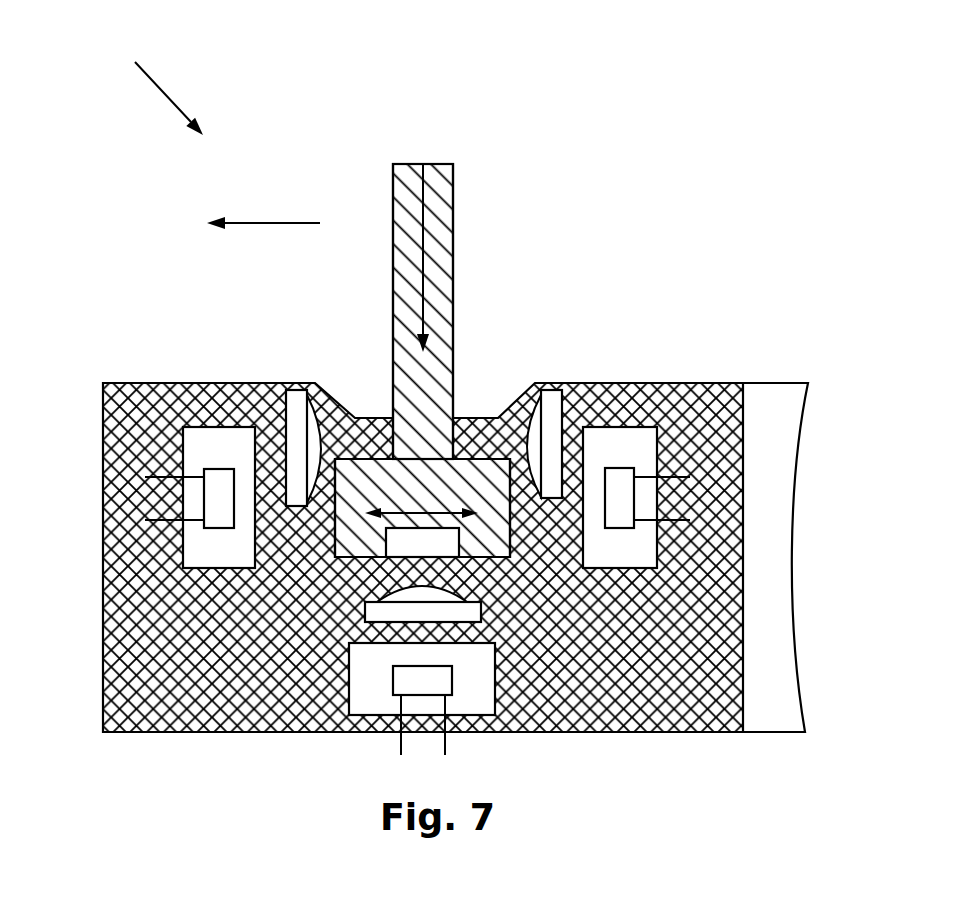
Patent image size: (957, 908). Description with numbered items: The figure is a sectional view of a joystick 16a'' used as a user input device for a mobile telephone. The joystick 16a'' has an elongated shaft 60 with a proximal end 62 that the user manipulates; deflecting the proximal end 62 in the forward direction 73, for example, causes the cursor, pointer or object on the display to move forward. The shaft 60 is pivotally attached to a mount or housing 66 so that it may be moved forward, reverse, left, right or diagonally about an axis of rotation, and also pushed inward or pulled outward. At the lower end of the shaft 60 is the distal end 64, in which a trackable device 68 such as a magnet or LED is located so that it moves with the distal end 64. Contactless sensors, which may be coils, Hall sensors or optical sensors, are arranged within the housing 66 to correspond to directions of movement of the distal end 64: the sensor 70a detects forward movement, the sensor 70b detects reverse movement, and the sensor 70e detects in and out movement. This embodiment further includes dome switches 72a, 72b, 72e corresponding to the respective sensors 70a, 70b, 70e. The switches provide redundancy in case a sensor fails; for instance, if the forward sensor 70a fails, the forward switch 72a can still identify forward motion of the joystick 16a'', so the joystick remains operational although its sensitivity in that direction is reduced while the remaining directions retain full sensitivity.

The joystick 16a'' is at (133, 75).
The elongated shaft 60 is at (453, 244).
The proximal end 62 is at (418, 164).
The distal end 64 is at (478, 558).
The housing 66 is at (655, 732).
The trackable device 68 is at (386, 556).
The sensor 70a is at (219, 469).
The sensor 70b is at (620, 468).
The sensor 70e is at (393, 673).
The dome switch 72a is at (298, 390).
The dome switch 72b is at (552, 390).
The dome switch 72e is at (483, 608).
The forward direction 73 is at (263, 244).